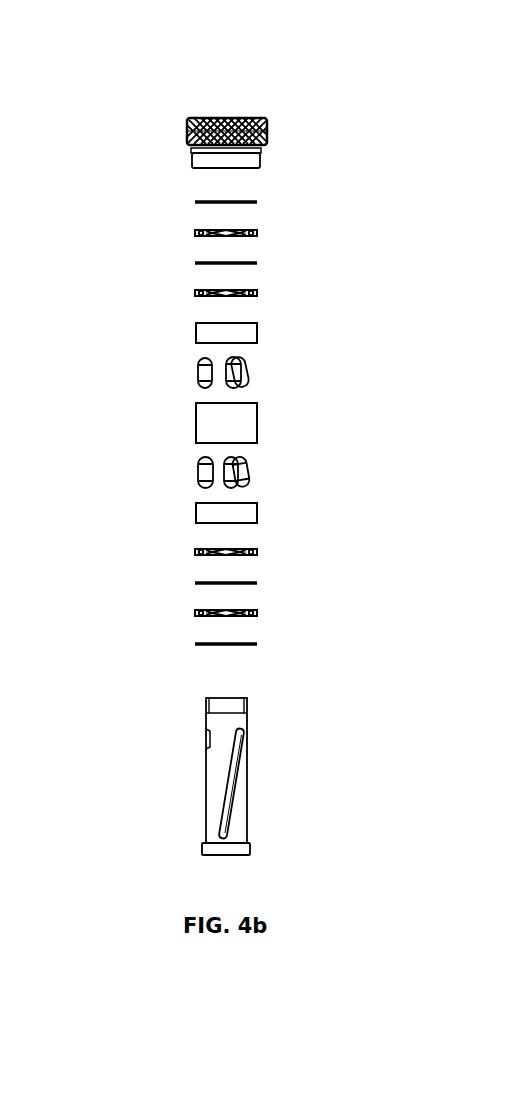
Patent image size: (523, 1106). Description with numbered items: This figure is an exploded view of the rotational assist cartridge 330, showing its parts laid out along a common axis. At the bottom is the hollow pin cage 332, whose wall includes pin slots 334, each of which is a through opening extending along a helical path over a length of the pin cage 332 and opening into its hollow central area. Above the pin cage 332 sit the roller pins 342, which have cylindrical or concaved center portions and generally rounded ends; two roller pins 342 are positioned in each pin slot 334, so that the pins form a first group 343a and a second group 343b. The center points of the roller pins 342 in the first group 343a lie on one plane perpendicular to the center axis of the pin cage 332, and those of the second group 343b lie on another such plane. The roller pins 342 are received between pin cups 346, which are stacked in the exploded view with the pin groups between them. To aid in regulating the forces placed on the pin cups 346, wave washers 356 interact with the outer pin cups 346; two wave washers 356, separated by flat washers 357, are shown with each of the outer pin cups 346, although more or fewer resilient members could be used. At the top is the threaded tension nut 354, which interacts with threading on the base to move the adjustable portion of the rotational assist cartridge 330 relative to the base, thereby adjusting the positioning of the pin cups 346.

The rotational assist cartridge 330 is at (192, 52).
The threaded tension nut 354 is at (272, 104).
The flat washers 357 is at (175, 263).
The wave washers 356 is at (270, 294).
The pin cups 346 is at (265, 333).
The roller pins 342 is at (185, 365).
The first group of roller pins 343a is at (258, 374).
The second group of roller pins 343b is at (184, 456).
The hollow pin cage 332 is at (183, 727).
The pin slots 334 is at (235, 775).